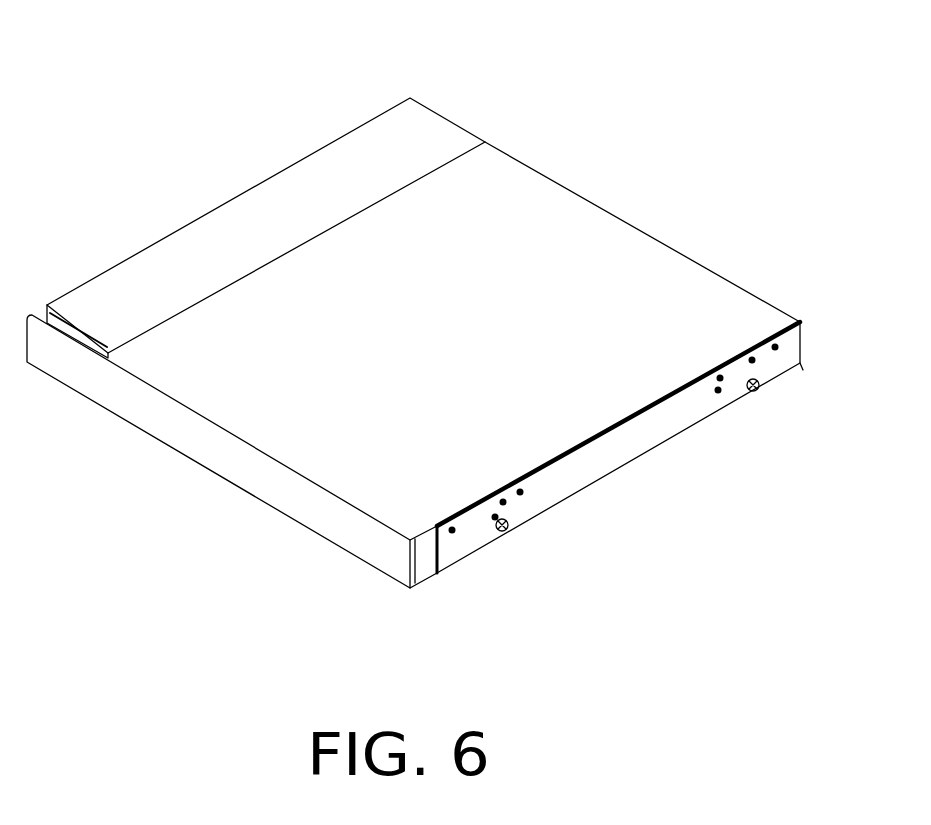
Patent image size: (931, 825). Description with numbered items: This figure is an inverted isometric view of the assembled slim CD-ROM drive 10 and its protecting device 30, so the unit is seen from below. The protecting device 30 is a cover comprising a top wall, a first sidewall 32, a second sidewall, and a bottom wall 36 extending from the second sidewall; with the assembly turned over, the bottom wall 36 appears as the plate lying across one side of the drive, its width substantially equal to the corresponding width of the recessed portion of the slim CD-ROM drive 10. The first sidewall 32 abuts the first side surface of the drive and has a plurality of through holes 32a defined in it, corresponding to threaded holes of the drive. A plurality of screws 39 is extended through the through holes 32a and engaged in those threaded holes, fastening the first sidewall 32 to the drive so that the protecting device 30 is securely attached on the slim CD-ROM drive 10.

The slim CD-ROM drive 10 is at (232, 422).
The protecting device 30 is at (303, 211).
The first sidewall 32 is at (622, 453).
The through holes 32a is at (522, 492).
The bottom wall 36 is at (422, 138).
The screws 39 is at (510, 528).